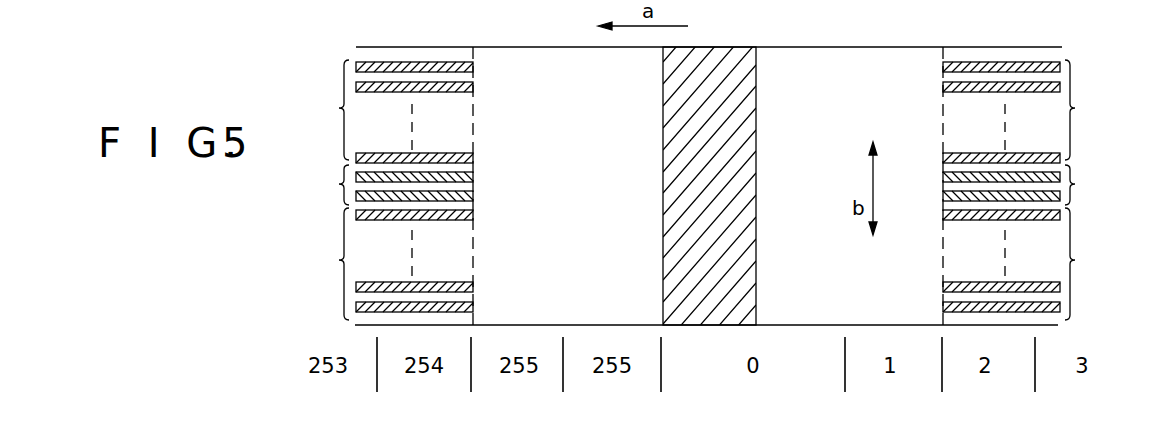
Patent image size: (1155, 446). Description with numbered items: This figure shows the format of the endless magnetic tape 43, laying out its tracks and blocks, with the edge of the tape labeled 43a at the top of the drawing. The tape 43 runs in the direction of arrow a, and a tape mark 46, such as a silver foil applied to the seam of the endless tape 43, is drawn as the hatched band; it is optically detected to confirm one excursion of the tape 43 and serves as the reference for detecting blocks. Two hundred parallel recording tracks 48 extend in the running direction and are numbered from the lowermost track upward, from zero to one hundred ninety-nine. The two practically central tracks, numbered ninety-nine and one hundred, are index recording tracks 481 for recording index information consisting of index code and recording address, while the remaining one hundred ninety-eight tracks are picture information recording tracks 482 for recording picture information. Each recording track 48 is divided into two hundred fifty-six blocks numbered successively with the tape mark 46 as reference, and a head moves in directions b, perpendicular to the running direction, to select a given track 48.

The magnetic tape 43 is at (885, 47).
The recording surface of disk 43a is at (722, 47).
The tape mark 46 is at (663, 131).
The recording tracks 48 is at (419, 60).
The index recording tracks 481 is at (706, 185).
The picture information recording tracks 482 is at (706, 190).